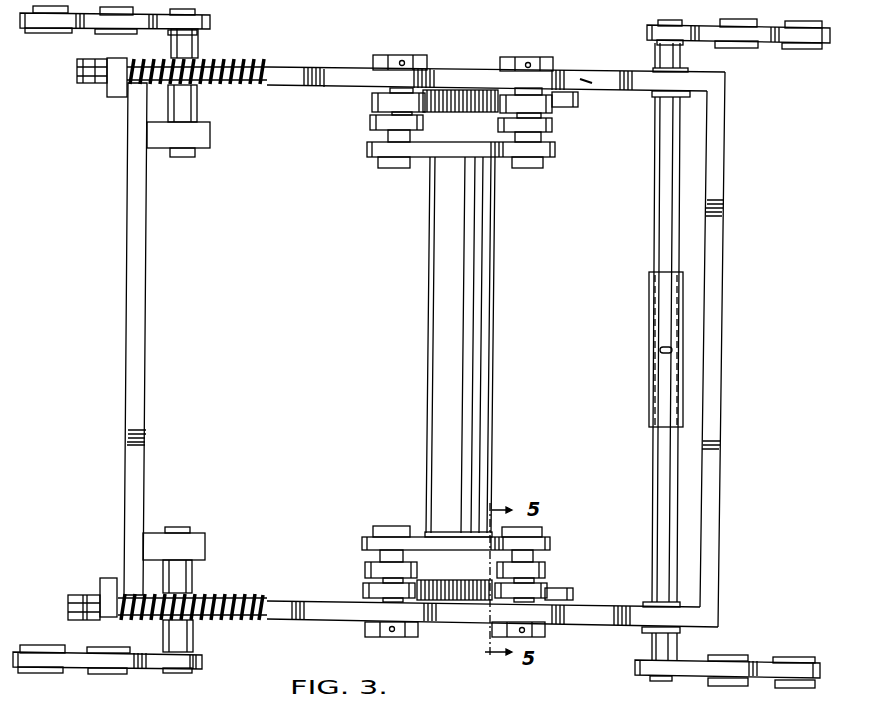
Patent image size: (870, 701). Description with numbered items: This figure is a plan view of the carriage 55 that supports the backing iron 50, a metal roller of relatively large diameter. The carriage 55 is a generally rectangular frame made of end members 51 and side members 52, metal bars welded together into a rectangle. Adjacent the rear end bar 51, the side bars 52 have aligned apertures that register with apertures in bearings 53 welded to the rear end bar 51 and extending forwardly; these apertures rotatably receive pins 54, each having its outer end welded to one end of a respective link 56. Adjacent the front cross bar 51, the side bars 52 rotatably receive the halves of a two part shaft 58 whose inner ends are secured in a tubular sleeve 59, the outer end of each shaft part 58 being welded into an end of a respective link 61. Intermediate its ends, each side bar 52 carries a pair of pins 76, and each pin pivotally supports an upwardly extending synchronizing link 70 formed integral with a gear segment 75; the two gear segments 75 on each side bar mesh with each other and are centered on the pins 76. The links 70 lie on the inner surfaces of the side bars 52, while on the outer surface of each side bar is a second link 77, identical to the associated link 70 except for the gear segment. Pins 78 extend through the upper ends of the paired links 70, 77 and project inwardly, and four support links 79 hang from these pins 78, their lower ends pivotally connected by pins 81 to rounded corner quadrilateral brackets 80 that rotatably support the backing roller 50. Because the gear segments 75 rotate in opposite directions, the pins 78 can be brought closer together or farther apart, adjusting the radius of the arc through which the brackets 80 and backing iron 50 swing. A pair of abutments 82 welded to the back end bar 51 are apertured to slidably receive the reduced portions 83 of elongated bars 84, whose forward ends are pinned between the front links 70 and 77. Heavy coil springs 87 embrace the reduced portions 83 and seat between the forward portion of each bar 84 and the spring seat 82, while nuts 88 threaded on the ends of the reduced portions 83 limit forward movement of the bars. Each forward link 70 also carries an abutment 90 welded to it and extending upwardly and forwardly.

The backing iron 50 is at (430, 330).
The end members 51 is at (132, 323).
The side members 52 is at (603, 92).
The bearings 53 is at (210, 130).
The pins 54 is at (200, 108).
The carriage 55 is at (734, 133).
The link 56 is at (207, 30).
The two part shaft 58 is at (657, 195).
The tubular sleeve 59 is at (655, 377).
The link 61 is at (773, 43).
The synchronizing link 70 is at (372, 103).
The gear segments 75 is at (476, 90).
The pins 76 is at (523, 55).
The second link 77 is at (383, 56).
The pins 78 is at (378, 77).
The support links 79 is at (371, 122).
The bracket 80 is at (423, 157).
The pins 81 is at (388, 168).
The abutments 82 is at (118, 97).
The reduced portions 83 is at (77, 70).
The bars 84 is at (300, 88).
The coil springs 87 is at (252, 84).
The nuts 88 is at (82, 595).
The abutment 90 is at (583, 80).